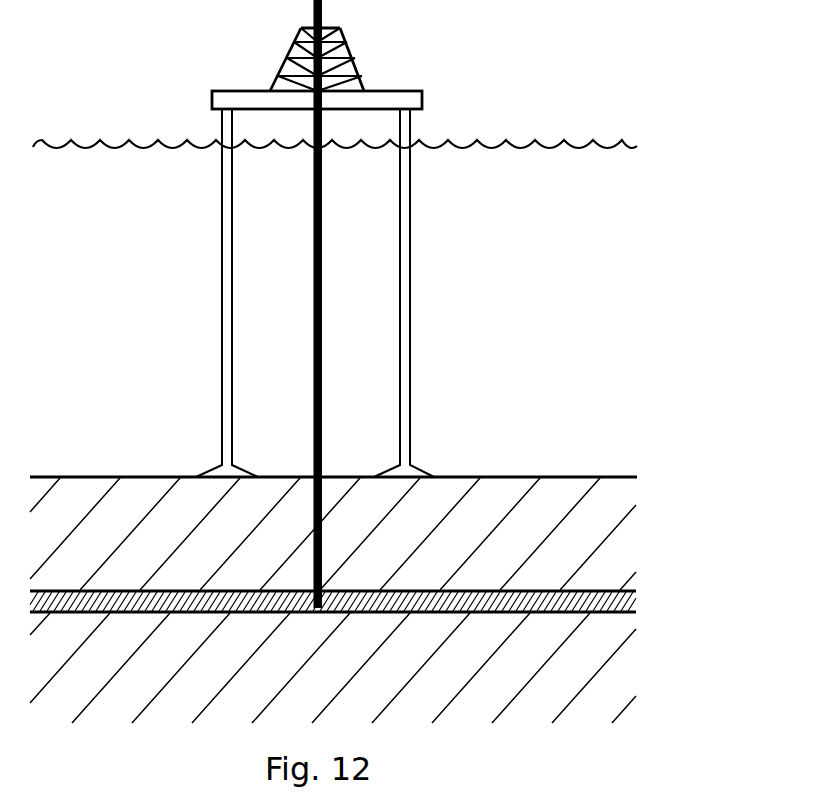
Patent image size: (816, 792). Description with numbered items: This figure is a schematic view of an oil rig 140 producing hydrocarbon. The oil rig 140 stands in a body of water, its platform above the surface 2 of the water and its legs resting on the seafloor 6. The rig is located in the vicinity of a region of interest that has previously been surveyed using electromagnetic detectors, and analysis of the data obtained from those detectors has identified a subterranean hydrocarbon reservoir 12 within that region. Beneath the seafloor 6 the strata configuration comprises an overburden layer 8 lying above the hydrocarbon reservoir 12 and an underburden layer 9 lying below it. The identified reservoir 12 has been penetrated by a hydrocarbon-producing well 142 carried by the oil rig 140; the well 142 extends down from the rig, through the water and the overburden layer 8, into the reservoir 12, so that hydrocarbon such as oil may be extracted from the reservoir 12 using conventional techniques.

The surface of a body of water 2 is at (90, 146).
The oil rig 140 is at (395, 91).
The hydrocarbon-producing well 142 is at (322, 472).
The seafloor 6 is at (455, 478).
The overburden layer 8 is at (612, 551).
The hydrocarbon reservoir 12 is at (635, 606).
The underburden layer 9 is at (613, 688).